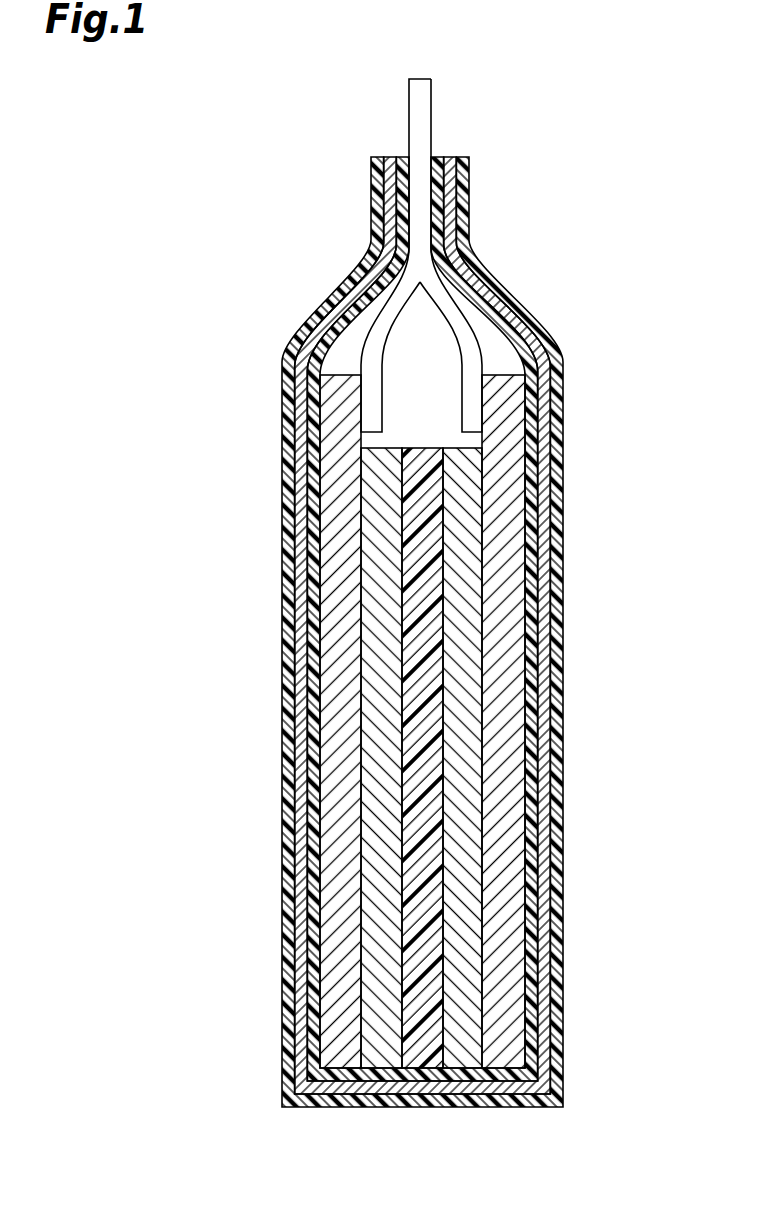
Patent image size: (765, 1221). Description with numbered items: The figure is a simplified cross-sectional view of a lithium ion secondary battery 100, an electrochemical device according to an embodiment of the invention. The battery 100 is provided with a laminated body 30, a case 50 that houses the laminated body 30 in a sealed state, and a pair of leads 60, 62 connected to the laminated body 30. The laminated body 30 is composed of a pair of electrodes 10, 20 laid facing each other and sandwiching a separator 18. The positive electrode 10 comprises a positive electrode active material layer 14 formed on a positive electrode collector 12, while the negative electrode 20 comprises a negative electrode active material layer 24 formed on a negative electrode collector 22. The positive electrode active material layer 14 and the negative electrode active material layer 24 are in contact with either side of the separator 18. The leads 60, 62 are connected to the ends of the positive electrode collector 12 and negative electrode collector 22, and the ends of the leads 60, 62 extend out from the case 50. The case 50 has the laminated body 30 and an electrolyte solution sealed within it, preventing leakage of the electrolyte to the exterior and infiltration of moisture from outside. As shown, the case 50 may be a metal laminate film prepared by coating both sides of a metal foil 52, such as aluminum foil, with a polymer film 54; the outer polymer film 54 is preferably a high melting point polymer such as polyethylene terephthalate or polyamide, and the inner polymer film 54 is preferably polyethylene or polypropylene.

The lithium ion secondary battery 100 is at (630, 107).
The positive electrode 10 is at (348, 721).
The positive electrode collector 12 is at (487, 548).
The positive electrode active material layer 14 is at (463, 585).
The separator 18 is at (420, 623).
The negative electrode 20 is at (287, 721).
The negative electrode collector 22 is at (337, 685).
The negative electrode active material layer 24 is at (373, 655).
The laminated body 30 is at (325, 721).
The case 50 is at (486, 632).
The metal foil 52 is at (547, 775).
The polymer film 54 is at (533, 745).
The lead 60 is at (398, 300).
The lead 62 is at (442, 300).